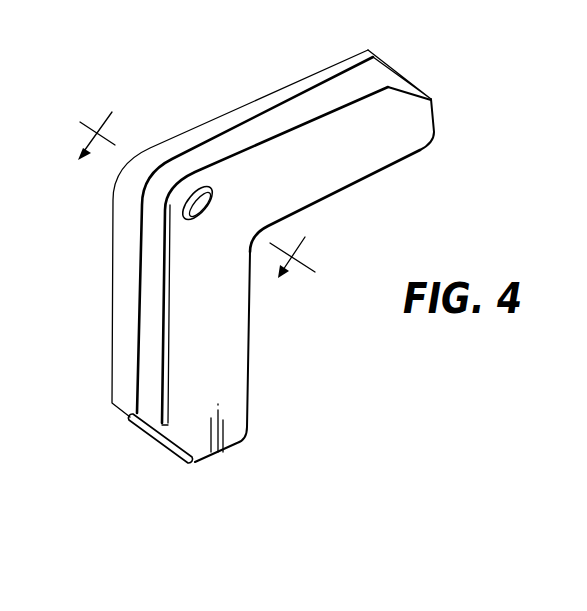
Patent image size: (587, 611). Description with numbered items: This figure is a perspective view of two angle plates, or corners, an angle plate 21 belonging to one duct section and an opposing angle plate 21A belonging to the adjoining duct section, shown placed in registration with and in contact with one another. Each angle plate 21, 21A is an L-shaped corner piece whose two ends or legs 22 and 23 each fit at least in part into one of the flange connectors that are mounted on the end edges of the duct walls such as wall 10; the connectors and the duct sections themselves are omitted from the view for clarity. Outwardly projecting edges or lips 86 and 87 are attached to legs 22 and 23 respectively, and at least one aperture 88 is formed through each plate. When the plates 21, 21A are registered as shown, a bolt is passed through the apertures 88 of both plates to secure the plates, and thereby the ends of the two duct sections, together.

The sheet-metal wall 10 is at (206, 184).
The angle plate 21 is at (258, 93).
The angle plate 21A is at (340, 207).
The leg 22 is at (405, 123).
The leg 23 is at (397, 65).
The lip 86 is at (332, 67).
The lip 87 is at (331, 113).
The aperture 88 is at (212, 198).